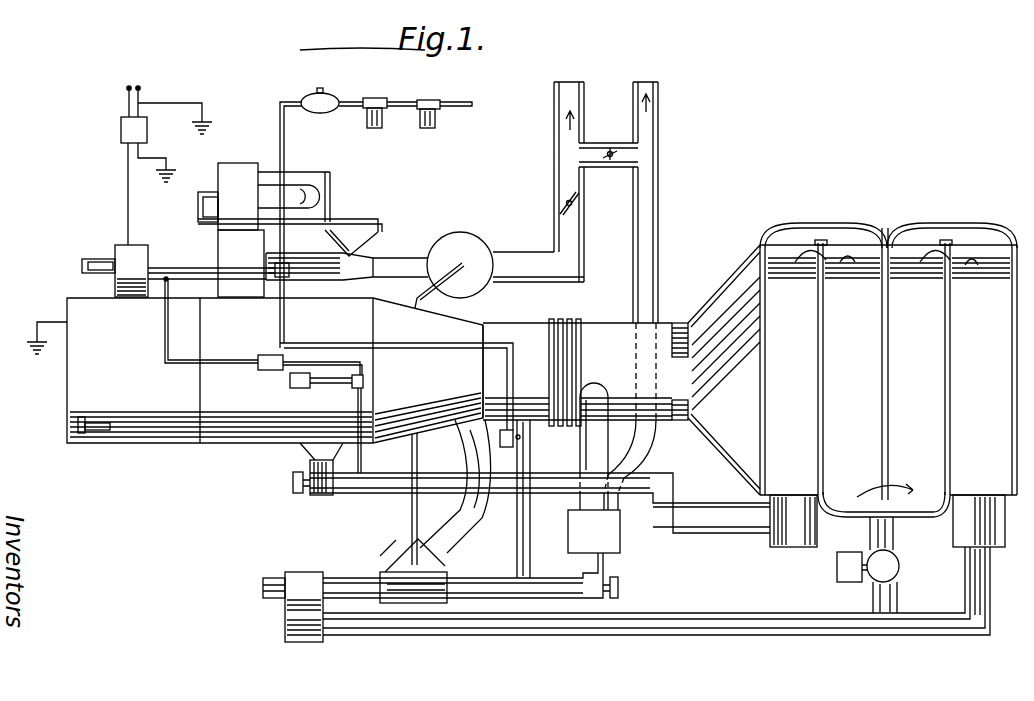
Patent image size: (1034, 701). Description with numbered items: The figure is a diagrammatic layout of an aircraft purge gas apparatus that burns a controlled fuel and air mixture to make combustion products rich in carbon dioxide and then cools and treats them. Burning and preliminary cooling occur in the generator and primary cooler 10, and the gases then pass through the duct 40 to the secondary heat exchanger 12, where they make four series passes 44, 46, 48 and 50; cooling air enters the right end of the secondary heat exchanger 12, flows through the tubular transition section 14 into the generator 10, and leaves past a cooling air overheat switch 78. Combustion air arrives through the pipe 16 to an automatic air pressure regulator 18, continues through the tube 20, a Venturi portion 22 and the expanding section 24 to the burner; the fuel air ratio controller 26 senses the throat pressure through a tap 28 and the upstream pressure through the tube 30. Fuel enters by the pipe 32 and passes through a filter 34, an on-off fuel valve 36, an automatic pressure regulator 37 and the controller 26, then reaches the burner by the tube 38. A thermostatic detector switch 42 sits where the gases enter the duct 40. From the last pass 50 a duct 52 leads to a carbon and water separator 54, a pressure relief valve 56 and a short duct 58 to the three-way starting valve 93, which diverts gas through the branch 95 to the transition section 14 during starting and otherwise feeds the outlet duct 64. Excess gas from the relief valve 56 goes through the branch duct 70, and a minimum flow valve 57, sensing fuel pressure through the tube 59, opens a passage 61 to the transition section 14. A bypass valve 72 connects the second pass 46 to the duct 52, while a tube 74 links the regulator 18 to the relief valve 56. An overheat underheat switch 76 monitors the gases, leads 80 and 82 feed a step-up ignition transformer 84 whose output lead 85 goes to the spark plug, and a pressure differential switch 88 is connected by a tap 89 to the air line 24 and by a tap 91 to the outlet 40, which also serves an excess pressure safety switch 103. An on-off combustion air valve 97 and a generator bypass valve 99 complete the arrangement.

The generator and primary cooler 10 is at (257, 415).
The secondary heat exchanger 12 is at (888, 356).
The tubular transition section 14 is at (612, 306).
The pipe 16 is at (524, 231).
The automatic air pressure regulator 18 is at (447, 243).
The tube 20 is at (397, 258).
The Venturi portion 22 is at (366, 243).
The expanding or pressure recovery section 24 is at (186, 240).
The fuel air ratio controller 26 is at (240, 183).
The tap 28 is at (330, 187).
The tube 30 is at (370, 219).
The pipe 32 is at (470, 107).
The filter 34 is at (432, 98).
The electrically actuated on-off fuel valve 36 is at (381, 97).
The automatic pressure regulator 37 is at (331, 95).
The tube 38 is at (88, 228).
The duct 40 is at (340, 495).
The thermostatically actuated detector switch 42 is at (292, 482).
The gas pass 44 is at (801, 356).
The second gas pass 46 is at (860, 356).
The gas pass 48 is at (923, 356).
The last pass 50 is at (991, 356).
The duct 52 is at (972, 587).
The carbon and water separator 54 is at (307, 620).
The pressure relief valve 56 is at (390, 553).
The pressure operated minimum flow valve 57 is at (506, 447).
The short duct 58 is at (507, 590).
The tube 59 is at (433, 343).
The passage 61 is at (518, 548).
The outlet duct 64 is at (640, 292).
The branch duct 70 is at (461, 513).
The bypass valve 72 is at (878, 582).
The tube 74 is at (410, 511).
The overheat underheat switch 76 is at (618, 587).
The cooling air overheat switch 78 is at (97, 417).
The electric lead 80 is at (127, 97).
The electric lead 82 is at (140, 98).
The step-up ignition transformer 84 is at (148, 130).
The lead 85 is at (128, 188).
The pressure differential switch 88 is at (265, 355).
The tap 89 is at (182, 364).
The tap 91 is at (353, 390).
The three-way starting valve 93 is at (563, 538).
The branch 95 is at (582, 448).
The on-off combustion air valve 97 is at (557, 196).
The generator bypass valve 99 is at (613, 150).
The excess pressure safety switch 103 is at (290, 380).